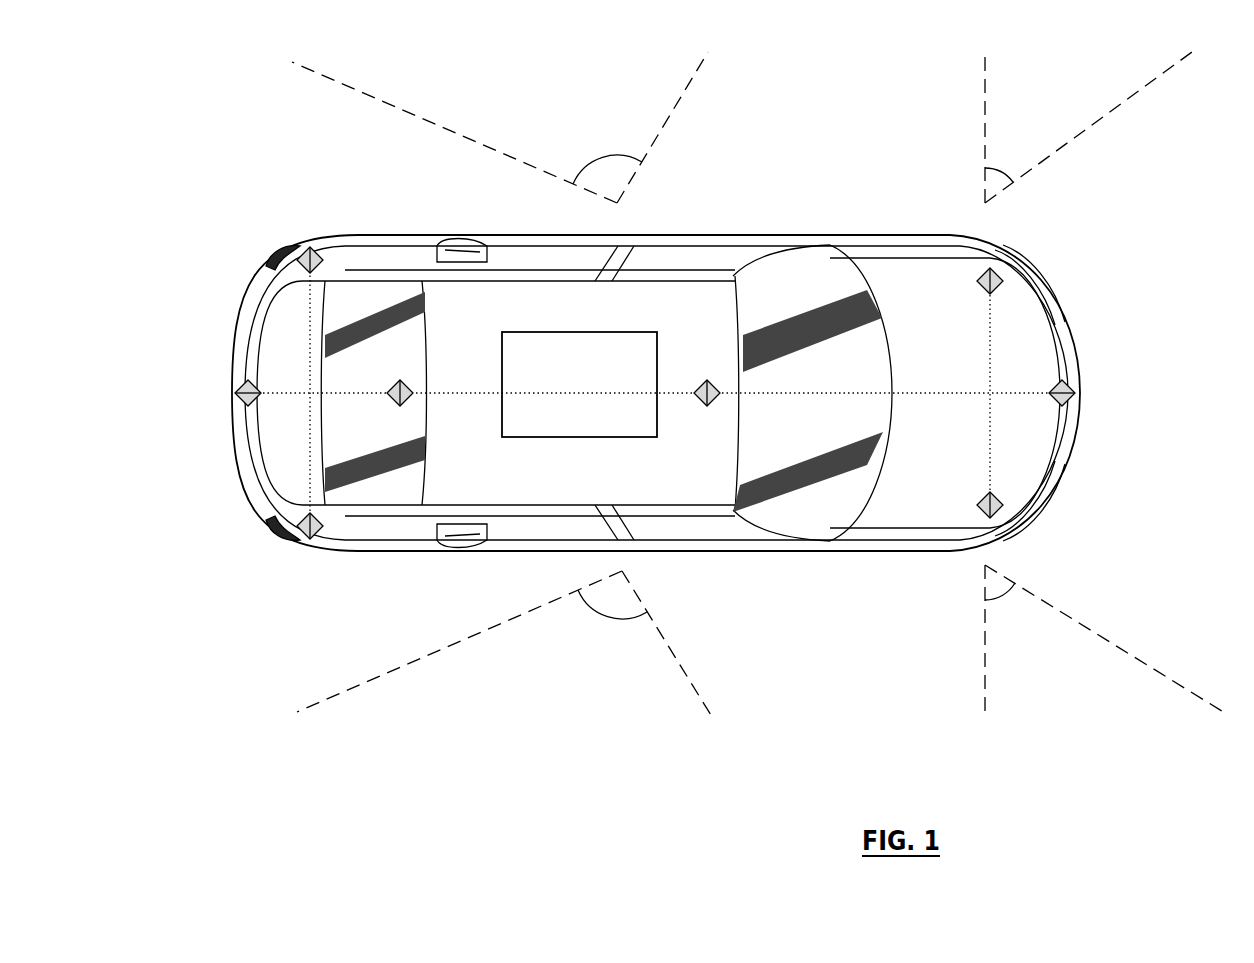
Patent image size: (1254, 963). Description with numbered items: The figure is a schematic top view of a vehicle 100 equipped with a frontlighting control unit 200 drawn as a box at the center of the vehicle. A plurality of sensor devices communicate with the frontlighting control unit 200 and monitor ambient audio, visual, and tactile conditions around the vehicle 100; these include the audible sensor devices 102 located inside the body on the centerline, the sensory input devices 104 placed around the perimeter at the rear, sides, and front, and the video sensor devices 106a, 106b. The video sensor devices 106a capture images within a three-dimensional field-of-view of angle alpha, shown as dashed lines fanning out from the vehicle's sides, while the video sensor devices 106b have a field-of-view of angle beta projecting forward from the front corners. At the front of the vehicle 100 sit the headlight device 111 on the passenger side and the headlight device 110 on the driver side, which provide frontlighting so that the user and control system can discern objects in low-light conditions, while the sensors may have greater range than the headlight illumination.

The vehicle 100 is at (882, 234).
The audible sensor device 102 is at (412, 388).
The sensory input device 104 is at (310, 247).
The video sensor device 106a is at (503, 385).
The video sensor device 106b is at (1105, 379).
The headlight device 110 is at (1025, 522).
The headlight device 111 is at (1033, 262).
The frontlighting control unit 200 is at (598, 440).